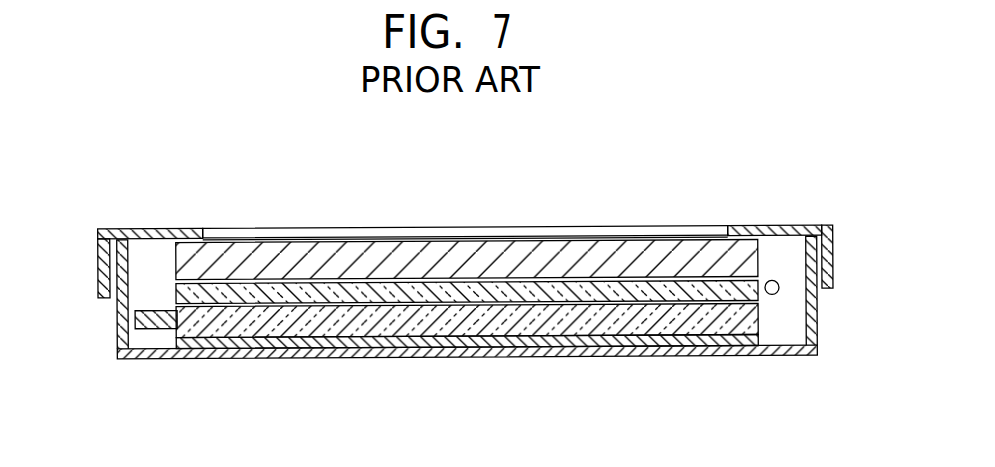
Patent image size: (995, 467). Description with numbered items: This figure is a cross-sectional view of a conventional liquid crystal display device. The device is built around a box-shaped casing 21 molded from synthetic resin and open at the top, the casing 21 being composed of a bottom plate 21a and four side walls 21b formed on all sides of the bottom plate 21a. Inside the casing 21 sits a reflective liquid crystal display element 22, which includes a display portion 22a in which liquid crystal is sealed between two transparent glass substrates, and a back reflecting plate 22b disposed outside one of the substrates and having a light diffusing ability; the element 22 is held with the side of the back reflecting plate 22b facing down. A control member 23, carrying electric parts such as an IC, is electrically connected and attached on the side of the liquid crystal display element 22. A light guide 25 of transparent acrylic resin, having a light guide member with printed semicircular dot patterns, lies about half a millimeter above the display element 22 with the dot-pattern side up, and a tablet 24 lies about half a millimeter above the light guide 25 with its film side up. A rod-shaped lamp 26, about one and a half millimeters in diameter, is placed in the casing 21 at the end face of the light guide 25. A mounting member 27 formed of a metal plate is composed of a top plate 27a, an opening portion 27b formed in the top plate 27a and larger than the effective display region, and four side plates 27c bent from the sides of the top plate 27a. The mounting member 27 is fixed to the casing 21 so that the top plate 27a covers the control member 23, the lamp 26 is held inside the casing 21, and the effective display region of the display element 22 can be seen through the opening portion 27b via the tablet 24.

The casing 21 is at (470, 346).
The bottom plate 21a is at (372, 352).
The side walls 21b is at (122, 318).
The reflective liquid crystal display element 22 is at (494, 365).
The display portion 22a is at (580, 326).
The back reflecting plate 22b is at (477, 341).
The control member 23 is at (148, 328).
The tablet 24 is at (764, 255).
The light guide 25 is at (253, 291).
The lamp 26 is at (778, 293).
The mounting member 27 is at (472, 221).
The top plate 27a is at (752, 226).
The opening portion 27b is at (380, 230).
The side plates 27c is at (102, 270).